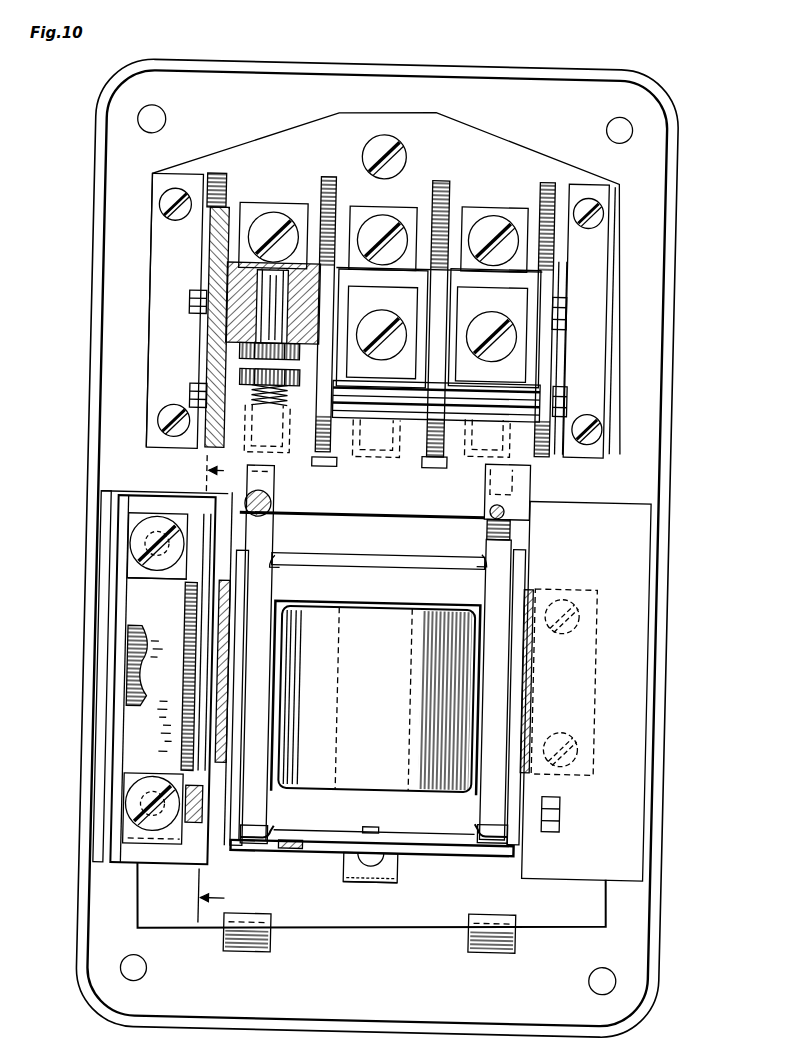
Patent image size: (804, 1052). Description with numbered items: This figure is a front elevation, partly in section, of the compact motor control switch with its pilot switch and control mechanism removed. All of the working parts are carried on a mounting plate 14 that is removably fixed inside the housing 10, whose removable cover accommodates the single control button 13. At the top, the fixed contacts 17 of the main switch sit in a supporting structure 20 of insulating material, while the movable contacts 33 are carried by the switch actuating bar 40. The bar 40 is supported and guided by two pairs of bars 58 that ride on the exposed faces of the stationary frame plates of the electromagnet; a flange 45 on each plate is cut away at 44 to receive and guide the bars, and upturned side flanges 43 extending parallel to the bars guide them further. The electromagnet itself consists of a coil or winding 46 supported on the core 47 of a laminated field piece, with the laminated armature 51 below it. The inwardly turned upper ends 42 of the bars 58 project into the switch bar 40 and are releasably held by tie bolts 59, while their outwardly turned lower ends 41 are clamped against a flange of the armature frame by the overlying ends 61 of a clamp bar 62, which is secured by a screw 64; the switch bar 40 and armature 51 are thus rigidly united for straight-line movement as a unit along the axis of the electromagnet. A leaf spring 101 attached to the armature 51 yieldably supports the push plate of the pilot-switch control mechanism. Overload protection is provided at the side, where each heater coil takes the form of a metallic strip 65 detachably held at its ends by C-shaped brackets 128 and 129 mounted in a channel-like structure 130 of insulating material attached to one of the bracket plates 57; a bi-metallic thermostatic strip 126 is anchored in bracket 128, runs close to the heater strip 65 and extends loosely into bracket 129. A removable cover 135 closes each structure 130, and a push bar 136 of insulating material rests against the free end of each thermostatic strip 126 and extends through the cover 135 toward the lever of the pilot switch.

The housing 10 is at (671, 276).
The mounting plate 14 is at (510, 158).
The supporting structure 20 is at (375, 256).
The fixed contacts 17 is at (235, 355).
The movable contacts 33 is at (236, 371).
The inwardly turned upper ends 42 is at (255, 470).
The tie bolts 59 is at (271, 505).
The bars 58 is at (503, 668).
The switch actuating bar 40 is at (367, 497).
The cut-away 44 is at (278, 558).
The flange 45 is at (398, 554).
The upturned side flanges 43 is at (244, 580).
The core 47 is at (346, 582).
The coil 46 is at (371, 640).
The overlying ends 61 is at (258, 828).
The clamp bar 62 is at (334, 833).
The armature 51 is at (423, 829).
The lower ends 41 is at (261, 852).
The screw 64 is at (363, 865).
The leaf spring 101 is at (366, 888).
The channel-like structure 130 is at (111, 616).
The C-shaped bracket 128 is at (128, 548).
The bi-metallic thermostatic strip 126 is at (138, 680).
The heater strip 65 is at (137, 738).
The bracket plates 57 is at (224, 730).
The C-shaped bracket 129 is at (126, 820).
The push bar 136 is at (200, 832).
The removable cover 135 is at (631, 789).
The control button 13 is at (202, 691).